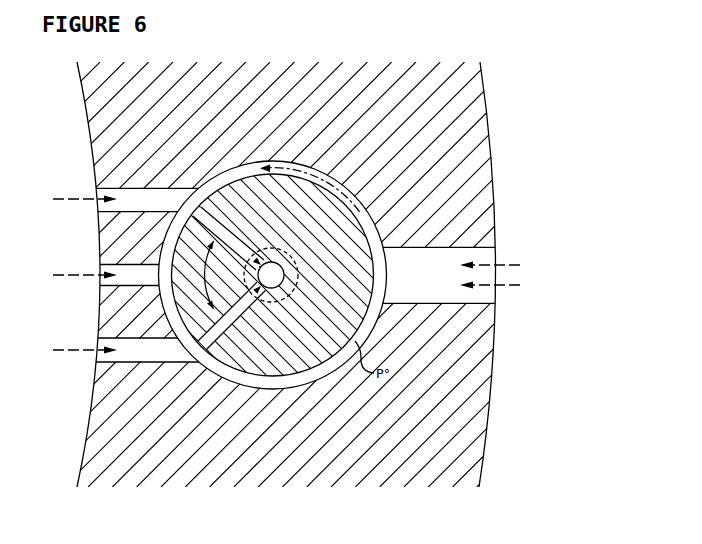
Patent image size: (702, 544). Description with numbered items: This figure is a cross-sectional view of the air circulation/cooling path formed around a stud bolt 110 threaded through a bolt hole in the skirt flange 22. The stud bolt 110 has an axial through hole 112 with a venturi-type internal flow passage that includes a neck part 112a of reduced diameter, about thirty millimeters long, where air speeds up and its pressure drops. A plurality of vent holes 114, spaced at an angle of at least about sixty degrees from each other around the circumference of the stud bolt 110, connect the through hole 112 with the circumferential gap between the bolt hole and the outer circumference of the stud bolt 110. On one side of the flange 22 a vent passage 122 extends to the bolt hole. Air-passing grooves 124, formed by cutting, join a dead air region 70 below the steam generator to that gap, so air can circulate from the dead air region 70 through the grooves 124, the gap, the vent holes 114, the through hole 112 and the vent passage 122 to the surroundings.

The flange of the skirt 22 is at (486, 412).
The dead air region 70 is at (61, 241).
The stud bolt 110 is at (358, 219).
The axial through hole 112 is at (271, 290).
The neck part 112a is at (286, 297).
The vent holes 114 is at (242, 222).
The vent passage 122 is at (433, 247).
The air-passing grooves 124 is at (131, 188).